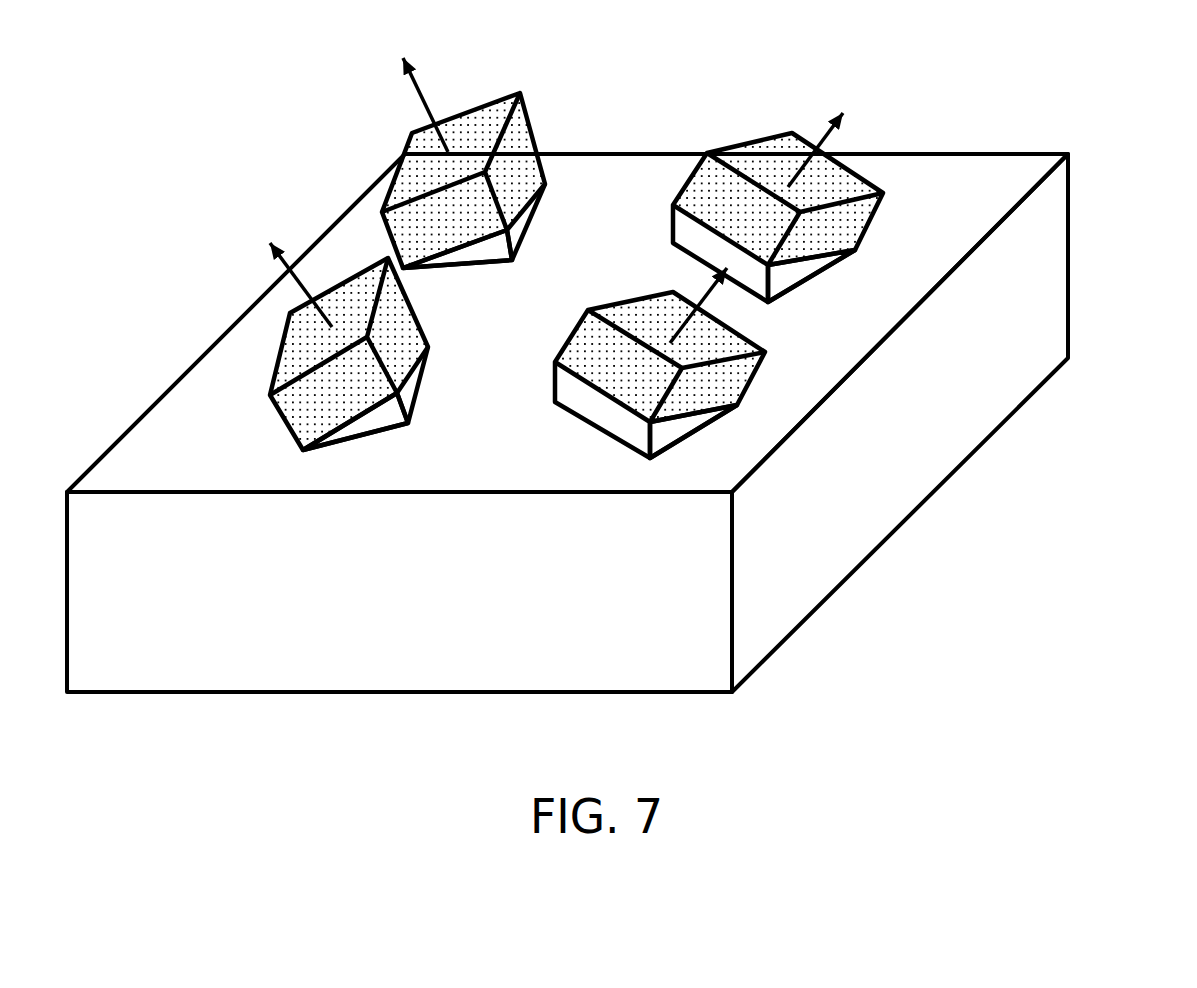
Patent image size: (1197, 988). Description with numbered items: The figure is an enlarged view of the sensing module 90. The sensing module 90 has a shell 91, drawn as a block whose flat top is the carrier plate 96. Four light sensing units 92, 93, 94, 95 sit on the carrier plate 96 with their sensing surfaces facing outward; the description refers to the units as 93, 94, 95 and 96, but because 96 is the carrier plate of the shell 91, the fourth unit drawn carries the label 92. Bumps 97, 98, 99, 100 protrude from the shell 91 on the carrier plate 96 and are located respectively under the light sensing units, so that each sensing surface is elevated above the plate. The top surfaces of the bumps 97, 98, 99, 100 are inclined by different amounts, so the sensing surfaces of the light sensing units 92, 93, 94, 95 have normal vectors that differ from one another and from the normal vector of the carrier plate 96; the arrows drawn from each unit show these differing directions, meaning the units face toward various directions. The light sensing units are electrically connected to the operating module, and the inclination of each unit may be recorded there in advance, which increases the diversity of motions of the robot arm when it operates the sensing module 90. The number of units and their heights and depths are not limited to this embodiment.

The sensing module 90 is at (291, 56).
The shell 91 is at (1070, 253).
The crystal 92 is at (923, 284).
The light sensing unit 93 is at (805, 440).
The light sensing unit 94 is at (405, 163).
The light sensing unit 95 is at (278, 346).
The carrier plate 96 is at (545, 317).
The bump 97 is at (786, 273).
The bump 98 is at (667, 430).
The bump 99 is at (457, 257).
The bump 100 is at (360, 427).